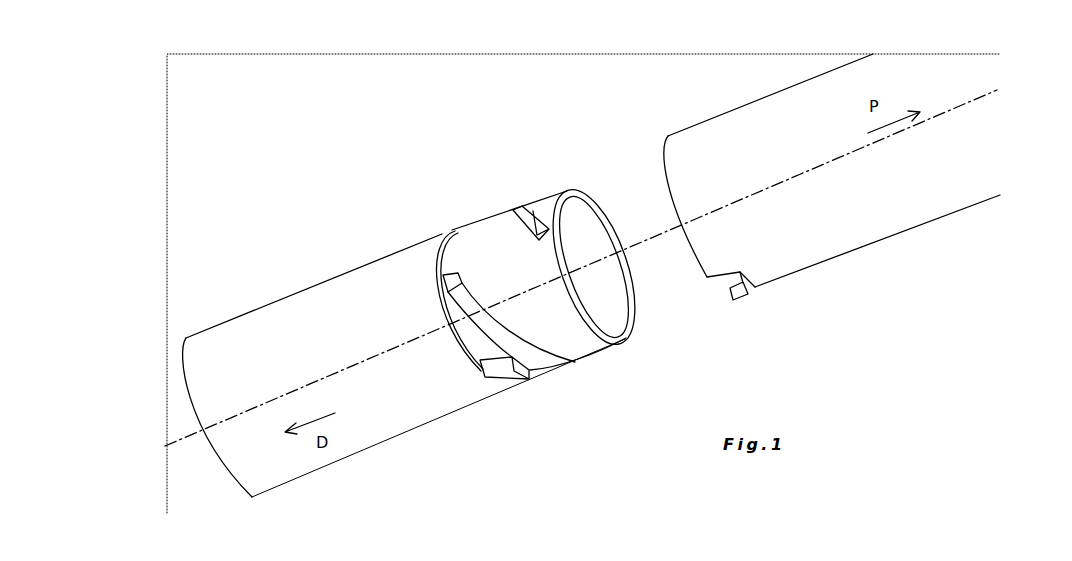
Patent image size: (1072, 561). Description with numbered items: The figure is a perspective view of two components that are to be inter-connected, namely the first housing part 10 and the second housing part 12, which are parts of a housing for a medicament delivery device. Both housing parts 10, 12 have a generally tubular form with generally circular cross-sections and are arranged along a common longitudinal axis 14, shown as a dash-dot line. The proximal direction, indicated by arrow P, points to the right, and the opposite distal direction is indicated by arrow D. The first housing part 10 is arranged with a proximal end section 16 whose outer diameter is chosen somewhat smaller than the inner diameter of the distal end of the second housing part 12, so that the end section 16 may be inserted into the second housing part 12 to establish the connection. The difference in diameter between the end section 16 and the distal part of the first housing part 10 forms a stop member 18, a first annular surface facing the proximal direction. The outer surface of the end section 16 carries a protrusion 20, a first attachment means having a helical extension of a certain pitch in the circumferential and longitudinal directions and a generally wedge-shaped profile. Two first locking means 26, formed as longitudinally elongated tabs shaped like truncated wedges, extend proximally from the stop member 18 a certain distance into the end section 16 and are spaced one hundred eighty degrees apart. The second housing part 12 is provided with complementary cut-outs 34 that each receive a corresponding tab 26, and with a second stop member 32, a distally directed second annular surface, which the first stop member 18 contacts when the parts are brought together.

The first housing part 10 is at (402, 313).
The second housing part 12 is at (828, 148).
The longitudinal axis 14 is at (260, 407).
The proximal end section 16 is at (518, 283).
The stop member 18 is at (453, 230).
The protrusion 20 is at (558, 360).
The first locking means 26 is at (476, 227).
The second stop member 32 is at (666, 160).
The cut-outs 34 is at (735, 283).